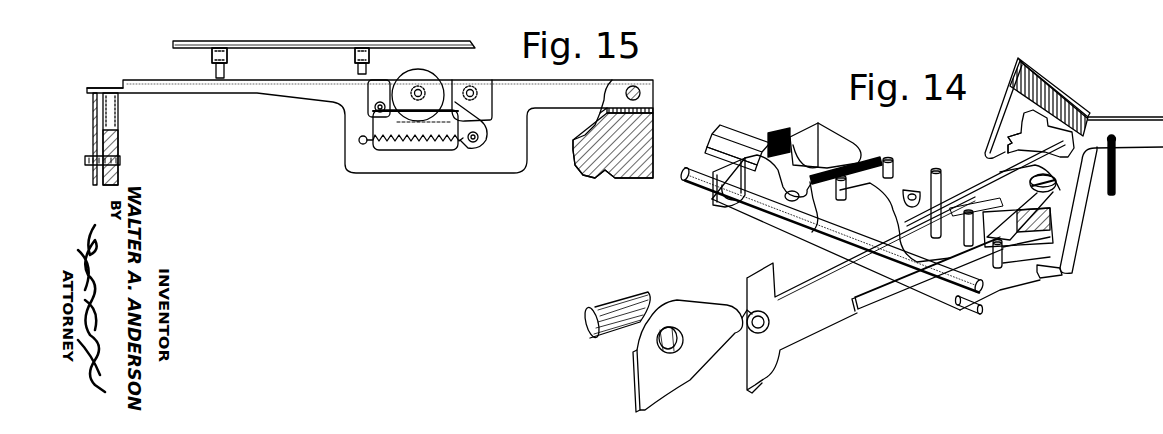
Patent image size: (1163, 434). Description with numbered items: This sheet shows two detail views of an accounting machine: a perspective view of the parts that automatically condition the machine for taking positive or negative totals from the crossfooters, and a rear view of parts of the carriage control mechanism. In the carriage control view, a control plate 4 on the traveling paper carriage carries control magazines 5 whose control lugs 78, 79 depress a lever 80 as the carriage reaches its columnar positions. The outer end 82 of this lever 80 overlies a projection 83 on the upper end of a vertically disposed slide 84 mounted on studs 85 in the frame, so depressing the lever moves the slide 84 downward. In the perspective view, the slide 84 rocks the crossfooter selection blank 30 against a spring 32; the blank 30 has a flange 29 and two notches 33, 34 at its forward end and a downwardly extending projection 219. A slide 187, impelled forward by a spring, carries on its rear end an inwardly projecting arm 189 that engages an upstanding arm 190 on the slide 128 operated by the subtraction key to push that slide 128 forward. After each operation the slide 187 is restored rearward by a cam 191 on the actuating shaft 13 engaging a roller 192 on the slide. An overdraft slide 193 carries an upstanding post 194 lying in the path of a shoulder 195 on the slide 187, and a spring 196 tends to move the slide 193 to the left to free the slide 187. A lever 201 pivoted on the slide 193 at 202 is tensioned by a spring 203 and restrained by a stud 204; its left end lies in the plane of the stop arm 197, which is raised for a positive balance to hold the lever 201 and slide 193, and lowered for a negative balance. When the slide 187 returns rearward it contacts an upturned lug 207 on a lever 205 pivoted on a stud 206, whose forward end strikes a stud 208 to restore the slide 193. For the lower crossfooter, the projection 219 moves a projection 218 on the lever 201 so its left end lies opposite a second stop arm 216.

In FIG. 15, the control plate 4 is at (198, 41).
In FIG. 15, the control magazines 5 is at (228, 54).
In FIG. 14, the actuating shaft 13 is at (610, 308).
In FIG. 14, the flange 29 is at (1062, 88).
In FIG. 14, the crossfooter selection blank 30 is at (1105, 116).
In FIG. 14, the spring 32 is at (1116, 170).
In FIG. 14, the notch 33 is at (1041, 133).
In FIG. 14, the notch 34 is at (1023, 142).
In FIG. 15, the control lug 78 is at (357, 70).
In FIG. 15, the control lug 79 is at (216, 72).
In FIG. 15, the lever 80 is at (318, 103).
In FIG. 15, the outer end of lever 82 is at (107, 86).
In FIG. 15, the projection 83 is at (93, 118).
In FIG. 15, the slide 84 is at (103, 178).
In FIG. 15, the studs 85 is at (85, 161).
In FIG. 14, the slide 128 is at (858, 312).
In FIG. 14, the slide 187 is at (785, 348).
In FIG. 14, the inwardly projecting arm 189 is at (963, 175).
In FIG. 14, the upstanding arm 190 is at (934, 169).
In FIG. 14, the cam 191 is at (692, 305).
In FIG. 14, the roller 192 is at (748, 312).
In FIG. 14, the overdraft slide 193 is at (760, 200).
In FIG. 14, the post 194 is at (968, 289).
In FIG. 14, the shoulder 195 is at (979, 298).
In FIG. 14, the spring 196 is at (818, 232).
In FIG. 14, the stop arm 197 is at (703, 142).
In FIG. 14, the lever 201 is at (890, 200).
In FIG. 14, the pivot 202 is at (933, 188).
In FIG. 14, the spring 203 is at (893, 146).
In FIG. 14, the stud 204 is at (792, 201).
In FIG. 14, the lever 205 is at (1050, 205).
In FIG. 14, the stud 206 is at (1018, 170).
In FIG. 14, the upturned lug 207 is at (1058, 184).
In FIG. 14, the stud 208 is at (1003, 268).
In FIG. 14, the stop arm 216 is at (727, 123).
In FIG. 14, the projection 218 is at (1050, 276).
In FIG. 14, the projection 219 is at (1068, 240).